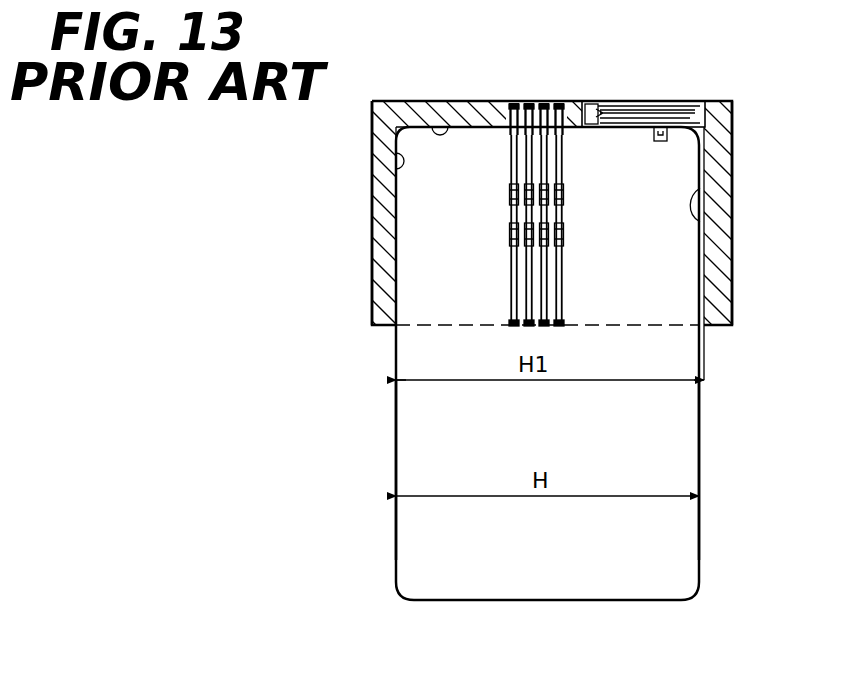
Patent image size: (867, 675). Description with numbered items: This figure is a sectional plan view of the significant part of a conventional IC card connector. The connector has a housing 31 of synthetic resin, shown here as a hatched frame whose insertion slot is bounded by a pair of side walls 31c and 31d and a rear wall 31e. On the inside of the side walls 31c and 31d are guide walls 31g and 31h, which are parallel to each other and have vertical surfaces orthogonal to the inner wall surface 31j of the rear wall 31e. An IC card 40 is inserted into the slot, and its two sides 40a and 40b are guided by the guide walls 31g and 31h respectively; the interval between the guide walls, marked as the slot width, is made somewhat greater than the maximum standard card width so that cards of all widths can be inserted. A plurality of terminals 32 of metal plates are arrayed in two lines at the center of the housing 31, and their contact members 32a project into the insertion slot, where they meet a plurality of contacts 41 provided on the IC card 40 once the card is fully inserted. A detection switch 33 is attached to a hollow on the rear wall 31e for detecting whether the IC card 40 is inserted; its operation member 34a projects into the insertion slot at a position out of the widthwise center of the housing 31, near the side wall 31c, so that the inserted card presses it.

The housing 31 is at (401, 100).
The inner wall surface 31j is at (437, 126).
The rear wall 31e is at (476, 100).
The guide wall 31h is at (396, 161).
The side wall 31d is at (376, 231).
The guide wall 31g is at (700, 183).
The side wall 31c is at (728, 250).
The detection switch 33 is at (616, 99).
The operation member 34a is at (660, 143).
The terminals 32 is at (563, 280).
The contact members 32a is at (562, 158).
The contacts 41 is at (508, 238).
The IC card 40 is at (427, 604).
The side of IC card 40a is at (699, 558).
The side of IC card 40b is at (396, 558).